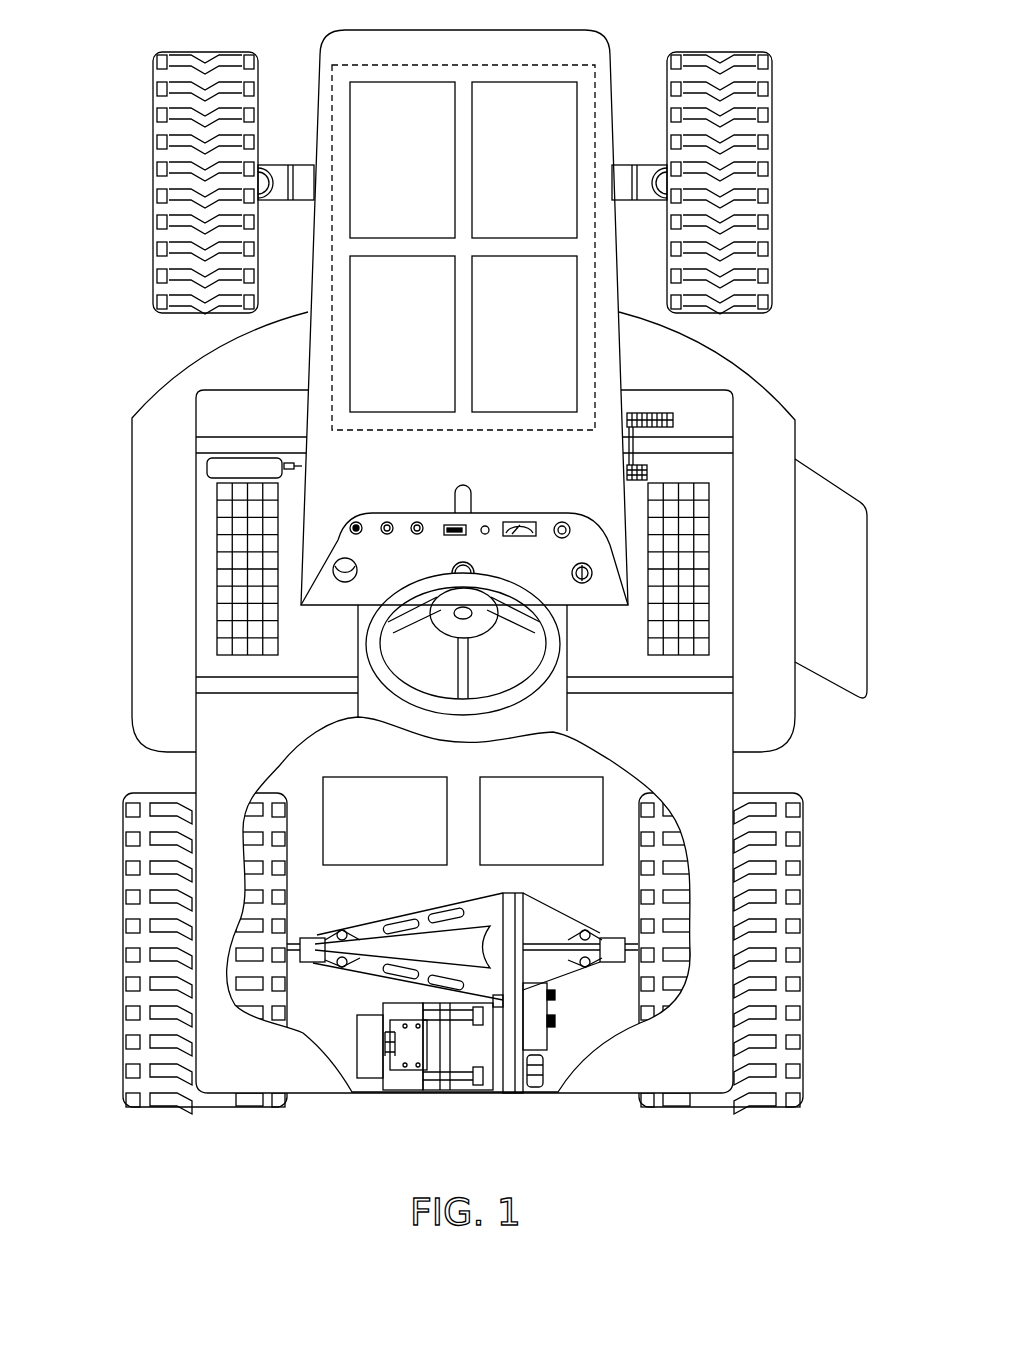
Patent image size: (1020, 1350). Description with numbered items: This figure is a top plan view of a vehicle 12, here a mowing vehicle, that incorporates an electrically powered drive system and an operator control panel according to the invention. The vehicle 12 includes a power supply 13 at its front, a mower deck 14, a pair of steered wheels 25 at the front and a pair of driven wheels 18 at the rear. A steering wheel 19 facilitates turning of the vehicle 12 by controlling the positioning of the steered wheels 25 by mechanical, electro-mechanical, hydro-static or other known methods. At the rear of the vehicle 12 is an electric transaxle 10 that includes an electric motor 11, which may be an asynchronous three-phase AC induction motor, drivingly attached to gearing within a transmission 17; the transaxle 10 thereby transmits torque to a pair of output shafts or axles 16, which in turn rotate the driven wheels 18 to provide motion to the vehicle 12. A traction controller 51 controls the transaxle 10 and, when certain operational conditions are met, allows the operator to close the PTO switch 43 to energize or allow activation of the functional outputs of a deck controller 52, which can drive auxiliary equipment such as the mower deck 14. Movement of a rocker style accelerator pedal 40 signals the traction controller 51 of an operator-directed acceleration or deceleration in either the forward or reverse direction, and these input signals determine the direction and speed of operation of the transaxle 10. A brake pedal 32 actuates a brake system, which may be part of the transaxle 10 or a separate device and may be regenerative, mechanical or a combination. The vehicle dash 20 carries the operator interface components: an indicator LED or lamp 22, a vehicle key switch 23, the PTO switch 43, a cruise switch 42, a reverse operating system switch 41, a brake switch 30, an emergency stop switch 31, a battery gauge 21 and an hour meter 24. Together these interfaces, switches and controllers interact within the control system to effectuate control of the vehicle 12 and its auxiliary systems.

The electric transaxle 10 is at (531, 789).
The electric motor 11 is at (468, 1093).
The vehicle 12 is at (352, 153).
The power supply 13 is at (462, 65).
The mower deck 14 is at (157, 420).
The output shafts or axles 16 is at (297, 940).
The transmission 17 is at (500, 1093).
The driven wheels 18 is at (175, 1110).
The steering wheel 19 is at (535, 695).
The vehicle dash 20 is at (387, 574).
The battery gauge 21 is at (520, 521).
The indicator LED or lamp 22 is at (485, 526).
The vehicle key switch 23 is at (584, 563).
The hour meter 24 is at (447, 524).
The steered wheels 25 is at (230, 52).
The brake switch 30 is at (417, 522).
The emergency stop switch 31 is at (342, 562).
The brake pedal 32 is at (247, 468).
The rocker style accelerator pedal 40 is at (653, 413).
The reverse operating system (ROS) switch 41 is at (387, 522).
The cruise switch 42 is at (357, 522).
The PTO switch 43 is at (562, 521).
The traction controller 51 is at (371, 832).
The deck controller 52 is at (528, 832).